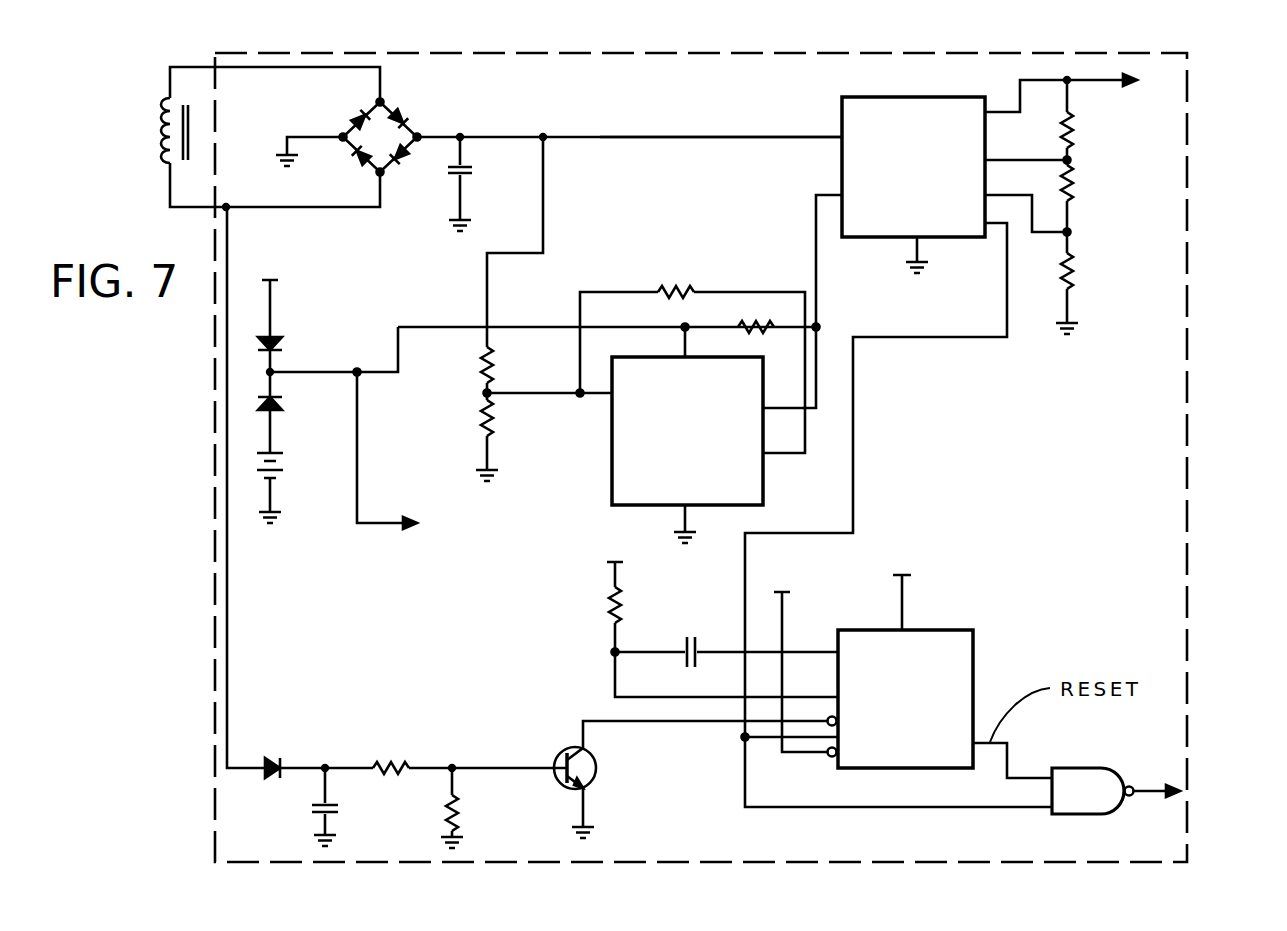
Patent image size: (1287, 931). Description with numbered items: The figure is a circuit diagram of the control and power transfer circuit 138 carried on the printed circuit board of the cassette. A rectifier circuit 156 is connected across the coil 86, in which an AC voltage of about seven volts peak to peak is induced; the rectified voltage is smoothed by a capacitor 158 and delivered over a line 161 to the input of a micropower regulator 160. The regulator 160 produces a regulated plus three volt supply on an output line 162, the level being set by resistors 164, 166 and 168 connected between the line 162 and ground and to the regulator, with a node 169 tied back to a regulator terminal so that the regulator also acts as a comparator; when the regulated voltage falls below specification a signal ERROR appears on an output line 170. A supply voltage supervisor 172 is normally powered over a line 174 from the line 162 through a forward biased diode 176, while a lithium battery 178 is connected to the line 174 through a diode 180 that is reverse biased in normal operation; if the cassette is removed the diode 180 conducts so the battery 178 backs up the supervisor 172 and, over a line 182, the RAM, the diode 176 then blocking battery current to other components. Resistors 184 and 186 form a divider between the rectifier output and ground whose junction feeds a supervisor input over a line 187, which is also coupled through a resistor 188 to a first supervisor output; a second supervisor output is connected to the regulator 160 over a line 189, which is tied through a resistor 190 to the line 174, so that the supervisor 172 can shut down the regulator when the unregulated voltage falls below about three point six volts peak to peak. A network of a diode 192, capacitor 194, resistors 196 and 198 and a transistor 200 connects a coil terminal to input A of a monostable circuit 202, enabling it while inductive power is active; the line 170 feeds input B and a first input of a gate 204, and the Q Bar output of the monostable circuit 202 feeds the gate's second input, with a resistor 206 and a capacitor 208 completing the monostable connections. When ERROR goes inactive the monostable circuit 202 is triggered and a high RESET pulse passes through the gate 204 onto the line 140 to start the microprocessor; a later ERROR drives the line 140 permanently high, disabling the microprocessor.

The coil 86 is at (165, 123).
The control and power transfer circuit 138 is at (1187, 283).
The line 140 is at (1143, 785).
The rectifier circuit 156 is at (406, 114).
The capacitor 158 is at (468, 176).
The micropower regulator 160 is at (940, 97).
The regulator input line 161 is at (765, 137).
The output line 162 is at (1025, 80).
The resistor 164 is at (1075, 126).
The resistor 166 is at (1073, 197).
The resistor 168 is at (1073, 262).
The line 169 is at (1040, 161).
The output line 170 is at (1007, 328).
The supply voltage supervisor 172 is at (763, 488).
The line 174 is at (547, 327).
The diode 176 is at (283, 345).
The lithium battery 178 is at (283, 467).
The diode 180 is at (283, 406).
The line 182 is at (358, 526).
The resistor 184 is at (480, 363).
The resistor 186 is at (480, 431).
The line 187 is at (552, 396).
The resistor 188 is at (668, 289).
The line 189 is at (818, 386).
The resistor 190 is at (742, 319).
The diode 192 is at (277, 760).
The capacitor 194 is at (312, 806).
The resistor 196 is at (385, 762).
The resistor 198 is at (462, 811).
The transistor 200 is at (597, 769).
The monostable circuit 202 is at (973, 630).
The gate 204 is at (1086, 770).
The resistor 206 is at (608, 592).
The capacitor 208 is at (698, 642).